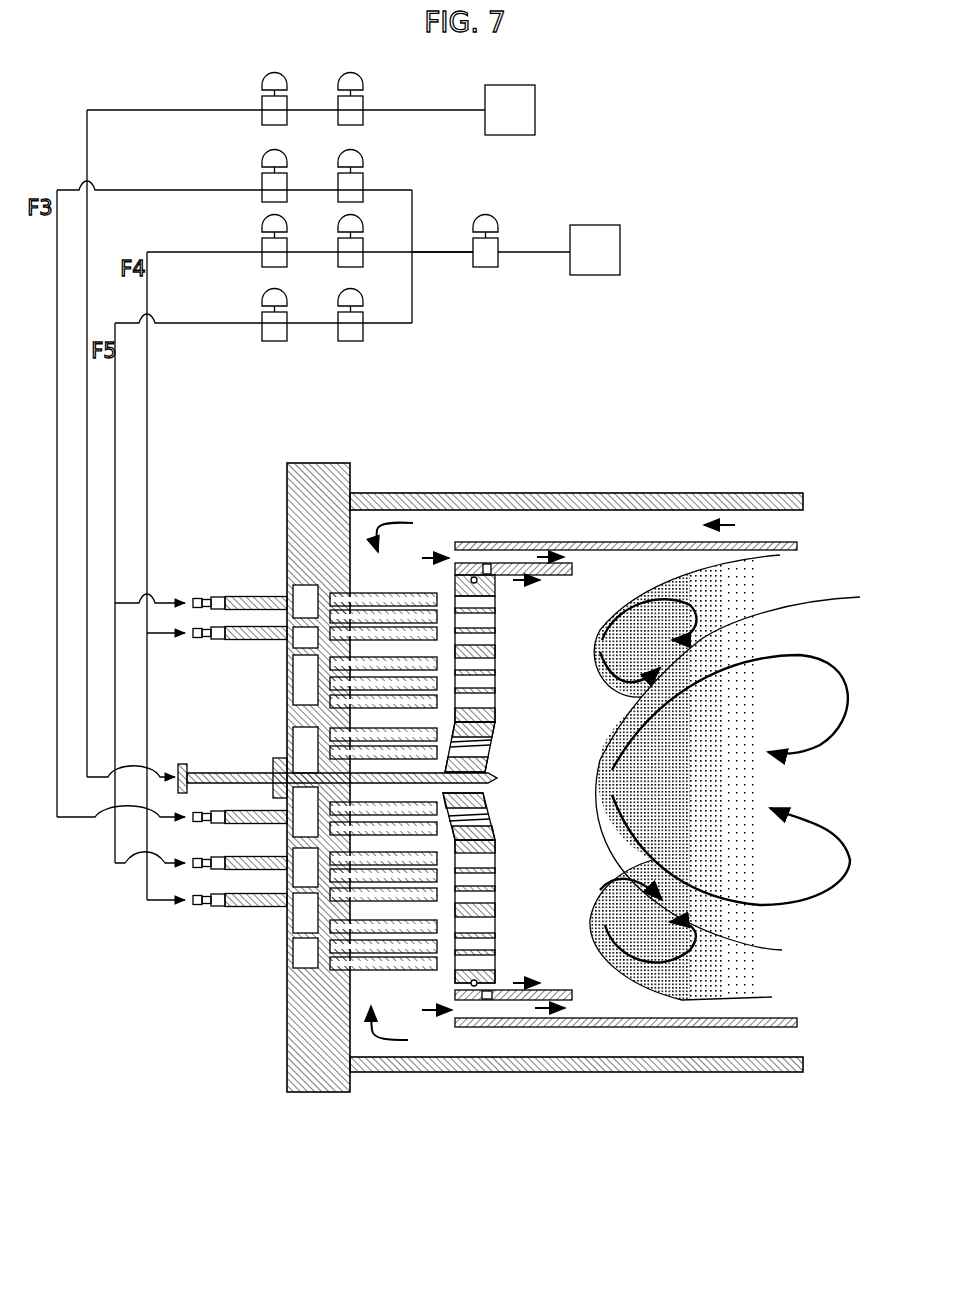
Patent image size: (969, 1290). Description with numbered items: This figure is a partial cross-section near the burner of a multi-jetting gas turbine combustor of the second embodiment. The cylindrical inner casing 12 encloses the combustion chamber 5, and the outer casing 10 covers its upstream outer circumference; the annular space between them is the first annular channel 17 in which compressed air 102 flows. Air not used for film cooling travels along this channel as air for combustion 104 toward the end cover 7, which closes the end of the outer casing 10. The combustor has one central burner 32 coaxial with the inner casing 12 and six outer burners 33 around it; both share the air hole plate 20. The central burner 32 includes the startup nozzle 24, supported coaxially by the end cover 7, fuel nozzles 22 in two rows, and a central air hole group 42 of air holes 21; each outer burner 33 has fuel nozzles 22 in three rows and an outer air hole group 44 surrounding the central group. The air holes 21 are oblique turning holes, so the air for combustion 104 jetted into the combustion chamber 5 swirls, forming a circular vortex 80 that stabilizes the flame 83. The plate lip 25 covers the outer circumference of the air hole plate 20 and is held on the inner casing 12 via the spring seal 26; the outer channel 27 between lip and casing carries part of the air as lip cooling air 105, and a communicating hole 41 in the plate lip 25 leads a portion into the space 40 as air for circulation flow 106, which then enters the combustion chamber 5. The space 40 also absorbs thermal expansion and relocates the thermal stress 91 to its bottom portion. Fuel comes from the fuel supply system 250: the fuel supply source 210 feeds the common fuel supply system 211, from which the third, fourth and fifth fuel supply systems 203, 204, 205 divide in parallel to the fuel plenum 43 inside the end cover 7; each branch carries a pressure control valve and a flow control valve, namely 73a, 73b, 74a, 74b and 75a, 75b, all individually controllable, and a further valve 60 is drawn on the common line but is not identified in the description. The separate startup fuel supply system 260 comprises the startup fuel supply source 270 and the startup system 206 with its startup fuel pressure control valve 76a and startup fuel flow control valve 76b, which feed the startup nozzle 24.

The startup system 206 is at (160, 108).
The third fuel supply system 203 is at (172, 190).
The fourth fuel supply system 204 is at (180, 252).
The fifth fuel supply system 205 is at (190, 323).
The common fuel supply system 211 is at (436, 250).
The startup fuel flow control valve 76b is at (290, 96).
The startup fuel pressure control valve 76a is at (366, 96).
The third fuel flow control valve 73b is at (290, 170).
The third fuel pressure control valve 73a is at (366, 170).
The fourth fuel flow control valve 74b is at (290, 234).
The fourth fuel pressure control valve 74a is at (366, 234).
The fifth fuel flow control valve 75b is at (290, 312).
The fifth fuel pressure control valve 75a is at (366, 312).
The valve 60 is at (498, 232).
The startup fuel supply source 270 is at (522, 135).
The startup fuel supply system 260 is at (572, 110).
The fuel supply source 210 is at (595, 275).
The fuel supply system 250 is at (450, 296).
The end cover 7 is at (287, 468).
The fuel plenum 43 is at (293, 600).
The fuel nozzles 22 is at (322, 775).
The startup nozzle 24 is at (183, 764).
The compressed air 102 is at (770, 512).
The first annular channel 17 is at (805, 498).
The inner casing 12 is at (670, 540).
The plate lip 25 is at (625, 540).
The communicating hole 41 is at (486, 563).
The outer channel 27 is at (552, 560).
The lip cooling air 105 is at (620, 522).
The air for combustion 104 is at (368, 527).
The outer casing 10 is at (463, 492).
The thermal stress 91 is at (487, 492).
The space 40 is at (496, 582).
The air holes 21 is at (470, 700).
The outer air hole group 44 is at (527, 672).
The central air hole group 42 is at (527, 790).
The outer burner 33 is at (547, 596).
The central burner 32 is at (547, 906).
The spring seal 26 is at (553, 1073).
The air for circulation flow 106 is at (548, 972).
The combustion chamber 5 is at (612, 1007).
The air hole plate 20 is at (400, 1068).
The circular vortex 80 is at (825, 905).
The flame 83 is at (797, 982).